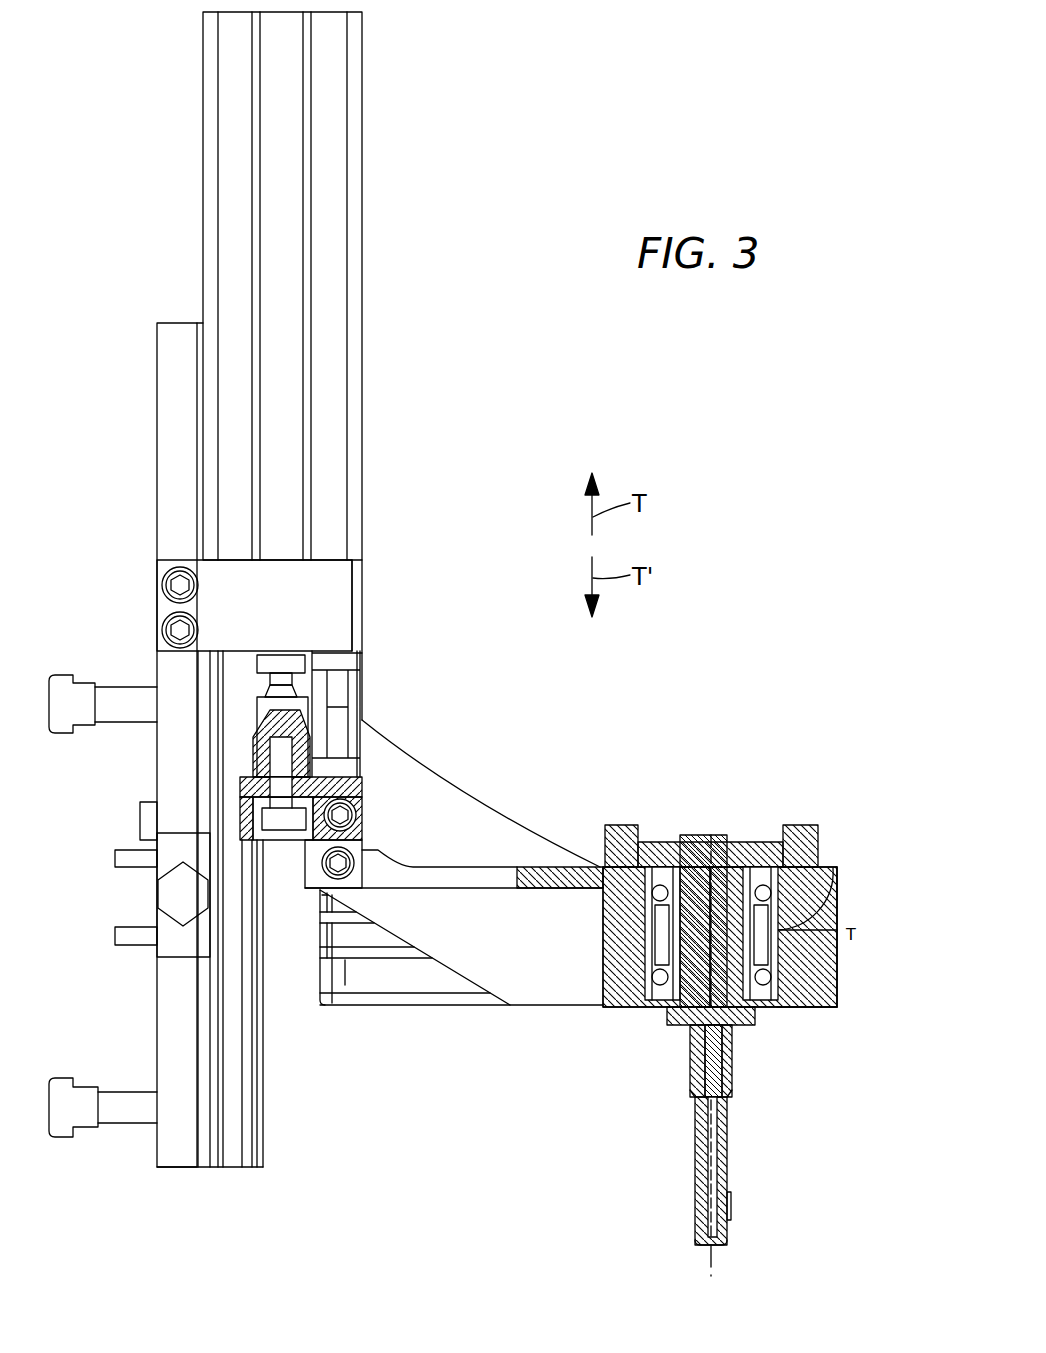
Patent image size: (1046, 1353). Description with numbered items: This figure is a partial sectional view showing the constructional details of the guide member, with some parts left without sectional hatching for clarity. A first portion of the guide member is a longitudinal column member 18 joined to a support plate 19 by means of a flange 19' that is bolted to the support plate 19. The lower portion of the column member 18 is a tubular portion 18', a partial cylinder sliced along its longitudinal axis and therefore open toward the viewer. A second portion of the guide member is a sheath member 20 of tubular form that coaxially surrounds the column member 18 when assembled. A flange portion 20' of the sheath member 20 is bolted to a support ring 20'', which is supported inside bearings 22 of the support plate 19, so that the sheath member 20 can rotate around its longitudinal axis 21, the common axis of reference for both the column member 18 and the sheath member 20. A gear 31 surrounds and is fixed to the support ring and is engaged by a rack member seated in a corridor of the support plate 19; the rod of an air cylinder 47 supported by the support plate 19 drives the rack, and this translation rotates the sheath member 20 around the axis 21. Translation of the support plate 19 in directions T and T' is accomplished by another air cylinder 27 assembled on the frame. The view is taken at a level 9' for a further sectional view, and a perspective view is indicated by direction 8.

The air cylinder 27 is at (352, 430).
The air cylinder 47 is at (392, 988).
The direction 8 is at (856, 835).
The support plate 19 is at (636, 890).
The flange 19' is at (773, 886).
The support ring 20'' is at (710, 807).
The bearings 22 is at (652, 980).
The longitudinal axis 21 is at (740, 835).
The gear 31 is at (838, 870).
The level 9' is at (838, 979).
The flange portion 20' is at (772, 1029).
The column member 18 is at (674, 1061).
The sheath member 20 is at (759, 1081).
The tubular portion 18' is at (757, 1186).